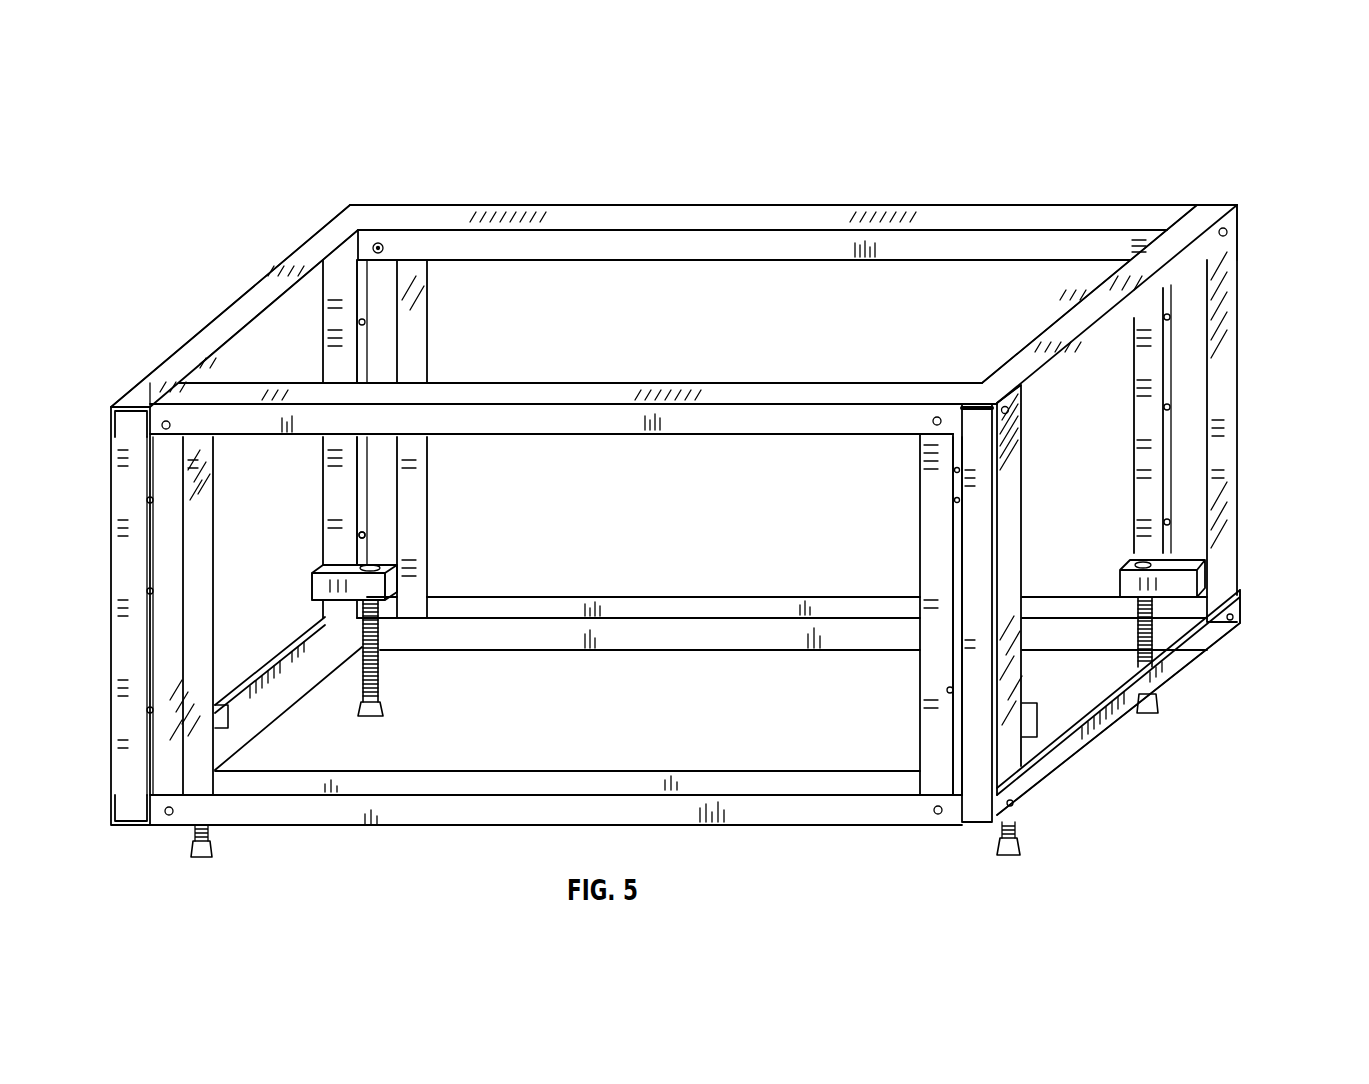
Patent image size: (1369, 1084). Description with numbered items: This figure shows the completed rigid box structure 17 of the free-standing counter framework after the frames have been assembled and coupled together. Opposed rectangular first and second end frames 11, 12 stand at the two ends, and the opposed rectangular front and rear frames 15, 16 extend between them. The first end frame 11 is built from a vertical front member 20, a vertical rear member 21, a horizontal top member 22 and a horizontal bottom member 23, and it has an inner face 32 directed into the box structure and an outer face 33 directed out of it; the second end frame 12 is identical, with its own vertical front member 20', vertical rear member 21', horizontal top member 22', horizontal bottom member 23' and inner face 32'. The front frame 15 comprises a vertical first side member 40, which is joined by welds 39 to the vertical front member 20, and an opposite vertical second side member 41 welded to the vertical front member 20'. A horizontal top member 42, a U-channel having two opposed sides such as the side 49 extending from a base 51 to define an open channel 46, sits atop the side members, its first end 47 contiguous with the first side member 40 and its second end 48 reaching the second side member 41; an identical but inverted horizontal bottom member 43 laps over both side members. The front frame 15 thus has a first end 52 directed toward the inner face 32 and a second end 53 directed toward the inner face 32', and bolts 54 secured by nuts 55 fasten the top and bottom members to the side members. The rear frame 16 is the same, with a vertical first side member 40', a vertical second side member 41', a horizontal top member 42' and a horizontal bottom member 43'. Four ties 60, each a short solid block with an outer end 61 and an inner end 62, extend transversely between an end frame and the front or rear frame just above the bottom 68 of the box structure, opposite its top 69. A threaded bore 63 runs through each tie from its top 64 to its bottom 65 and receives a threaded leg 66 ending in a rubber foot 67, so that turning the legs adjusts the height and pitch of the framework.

The first end frame 11 is at (255, 264).
The second end frame 12 is at (1094, 268).
The front frame 15 is at (160, 839).
The rear frame 16 is at (1187, 193).
The box structure 17 is at (1248, 649).
The vertical front member 20 is at (122, 616).
The vertical front member 20' is at (1032, 603).
The vertical rear member 21 is at (315, 439).
The vertical rear member 21' is at (1270, 413).
The horizontal top member 22 is at (279, 301).
The horizontal top member 22' is at (1109, 307).
The horizontal bottom member 23 is at (288, 693).
The horizontal bottom member 23' is at (1118, 702).
The inner face 32 is at (237, 377).
The inner face 32' is at (1003, 540).
The outer face 33 is at (240, 299).
The welds 39 is at (151, 730).
The vertical first side member 40 is at (228, 616).
The vertical first side member 40' is at (450, 439).
The vertical second side member 41 is at (904, 614).
The vertical second side member 41' is at (1119, 420).
The horizontal top member 42 is at (573, 365).
The horizontal top member 42' is at (793, 201).
The horizontal bottom member 43 is at (556, 839).
The horizontal bottom member 43' is at (782, 659).
The open channel 46 is at (793, 453).
The first end 47 is at (172, 402).
The second end 48 is at (958, 392).
The side 49 is at (768, 420).
The base 51 is at (770, 384).
The first end 52 is at (143, 549).
The second end 53 is at (962, 470).
The bolts 54 is at (938, 416).
The nuts 55 is at (384, 244).
The tie 60 is at (1215, 570).
The outer end 61 is at (308, 590).
The inner end 62 is at (408, 587).
The threaded bore 63 is at (378, 552).
The top 64 is at (349, 513).
The bottom 65 is at (343, 603).
The leg 66 is at (380, 672).
The foot 67 is at (383, 707).
The bottom 68 is at (1271, 620).
The top 69 is at (1268, 223).